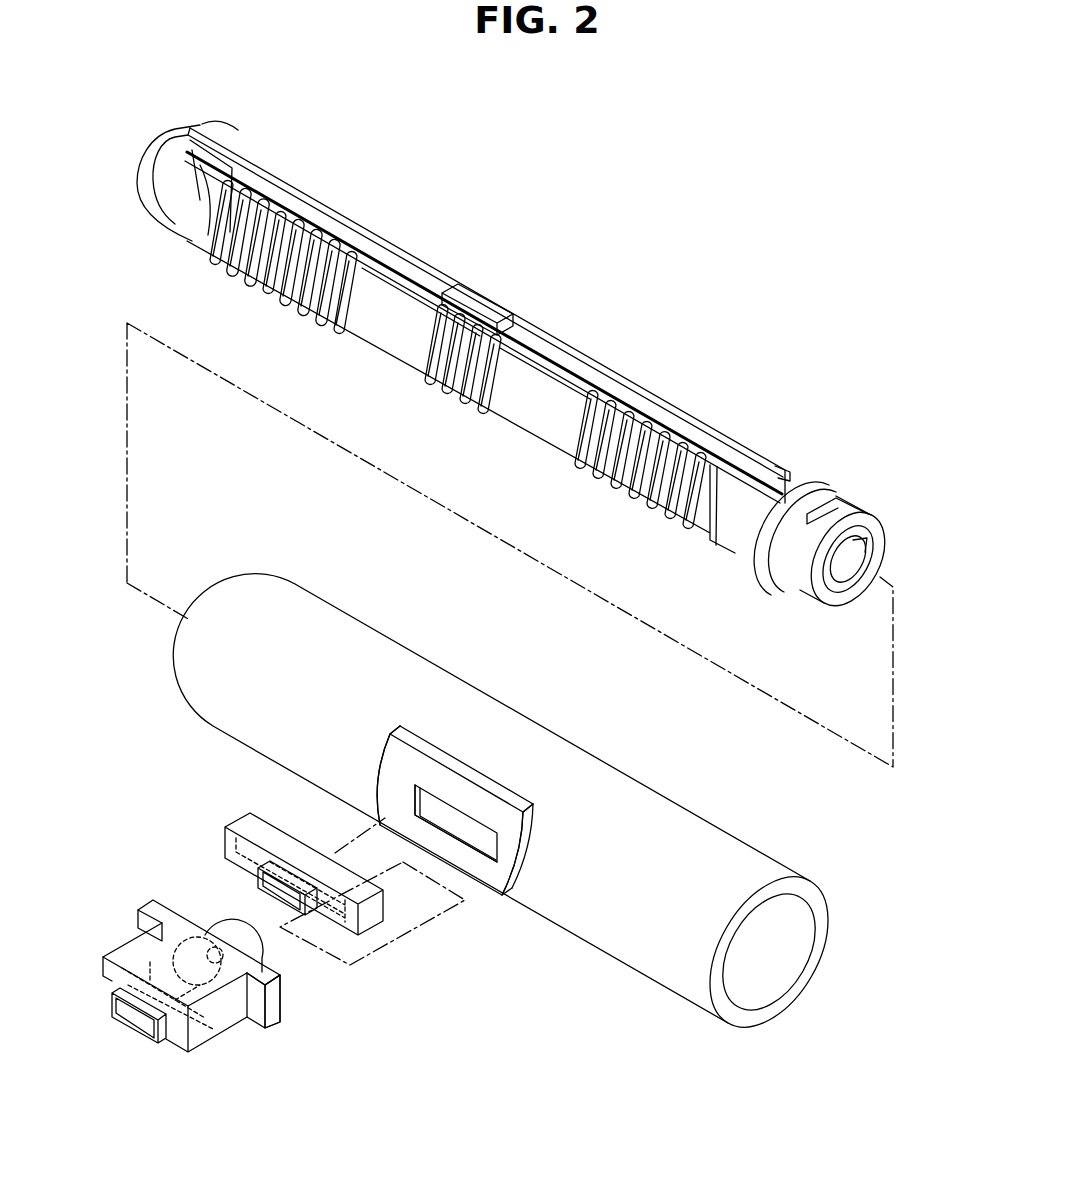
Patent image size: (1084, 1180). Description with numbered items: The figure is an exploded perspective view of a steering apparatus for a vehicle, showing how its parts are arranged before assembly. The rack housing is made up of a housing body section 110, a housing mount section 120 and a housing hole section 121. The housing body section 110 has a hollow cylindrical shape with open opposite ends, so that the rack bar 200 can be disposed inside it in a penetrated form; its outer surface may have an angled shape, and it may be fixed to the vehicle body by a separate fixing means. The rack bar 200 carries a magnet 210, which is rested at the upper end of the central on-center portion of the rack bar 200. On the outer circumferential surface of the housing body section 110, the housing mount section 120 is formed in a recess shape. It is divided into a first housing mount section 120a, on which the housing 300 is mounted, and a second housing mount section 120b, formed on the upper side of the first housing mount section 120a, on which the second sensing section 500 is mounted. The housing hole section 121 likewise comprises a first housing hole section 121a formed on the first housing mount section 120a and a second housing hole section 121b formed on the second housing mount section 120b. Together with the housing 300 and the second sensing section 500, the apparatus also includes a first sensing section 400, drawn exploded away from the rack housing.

The housing body section 110 is at (490, 690).
The housing mount section 120 is at (573, 994).
The first housing mount section 120a is at (493, 878).
The second housing mount section 120b is at (537, 782).
The housing hole section 121 is at (444, 594).
The first housing hole section 121a is at (382, 798).
The second housing hole section 121b is at (425, 765).
The rack bar 200 is at (804, 497).
The magnet 210 is at (483, 313).
The housing 300 is at (213, 1040).
The first sensing section 400 is at (272, 960).
The second sensing section 500 is at (231, 817).